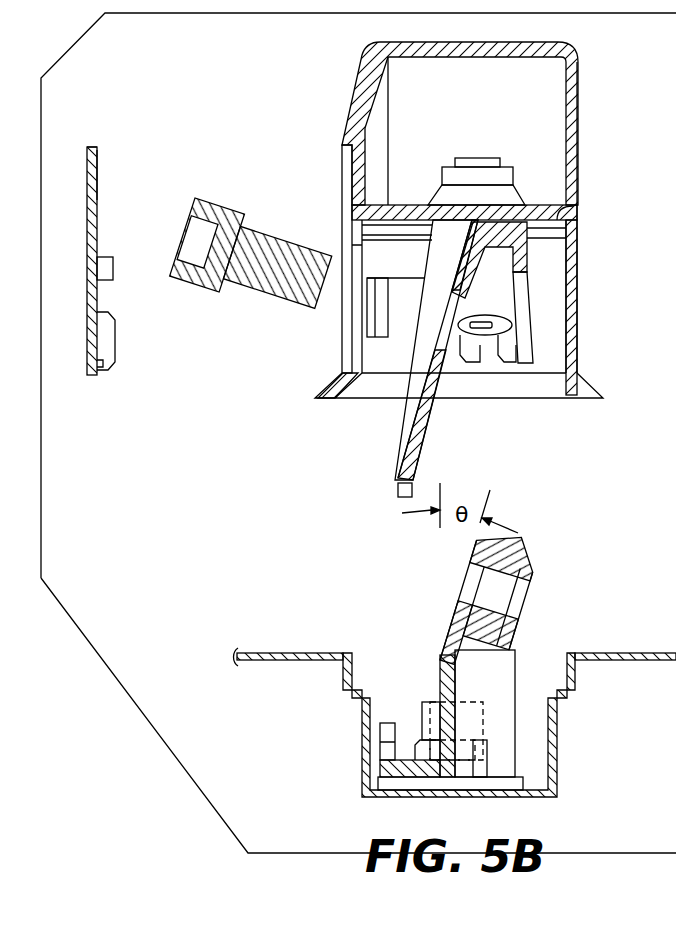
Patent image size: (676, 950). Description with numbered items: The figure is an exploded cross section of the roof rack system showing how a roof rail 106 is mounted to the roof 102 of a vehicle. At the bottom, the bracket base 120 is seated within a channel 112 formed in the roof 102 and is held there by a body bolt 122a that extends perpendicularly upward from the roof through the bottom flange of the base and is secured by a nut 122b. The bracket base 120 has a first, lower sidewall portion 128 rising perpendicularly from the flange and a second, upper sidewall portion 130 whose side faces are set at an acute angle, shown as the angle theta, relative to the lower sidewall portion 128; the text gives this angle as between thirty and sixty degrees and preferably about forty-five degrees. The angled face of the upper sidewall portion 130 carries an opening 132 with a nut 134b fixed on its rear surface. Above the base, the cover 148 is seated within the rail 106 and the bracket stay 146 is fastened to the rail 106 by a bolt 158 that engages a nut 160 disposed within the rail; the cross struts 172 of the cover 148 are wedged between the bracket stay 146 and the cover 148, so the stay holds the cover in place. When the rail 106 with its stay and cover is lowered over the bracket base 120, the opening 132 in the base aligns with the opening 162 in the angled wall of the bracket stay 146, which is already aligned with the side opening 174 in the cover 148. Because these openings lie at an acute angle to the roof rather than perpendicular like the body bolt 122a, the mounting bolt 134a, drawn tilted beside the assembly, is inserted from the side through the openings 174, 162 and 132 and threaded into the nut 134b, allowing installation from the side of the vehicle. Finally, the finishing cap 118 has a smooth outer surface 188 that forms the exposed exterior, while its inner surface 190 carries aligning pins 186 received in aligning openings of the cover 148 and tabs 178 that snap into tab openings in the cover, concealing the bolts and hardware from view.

The roof 102 is at (617, 652).
The roof rail 106 is at (354, 56).
The channel 112 is at (558, 772).
The finishing cap 118 is at (103, 143).
The bracket base 120 is at (431, 633).
The threaded bolt 122a is at (487, 773).
The nut 122b is at (422, 703).
The first, lower sidewall portion 128 is at (440, 680).
The second, upper sidewall portion 130 is at (460, 623).
The opening 132 is at (473, 588).
The mounting bolt 134a is at (232, 197).
The nut 134b is at (527, 555).
The bracket stay 146 is at (546, 256).
The cover 148 is at (582, 324).
The bolt 158 is at (497, 302).
The nut 160 is at (478, 178).
The opening 162 is at (450, 332).
The cross strut 172 is at (560, 230).
The opening 174 is at (352, 347).
The tab 178 is at (105, 342).
The aligning pin 186 is at (108, 268).
The outer surface 188 is at (87, 153).
The inner surface 190 is at (97, 174).